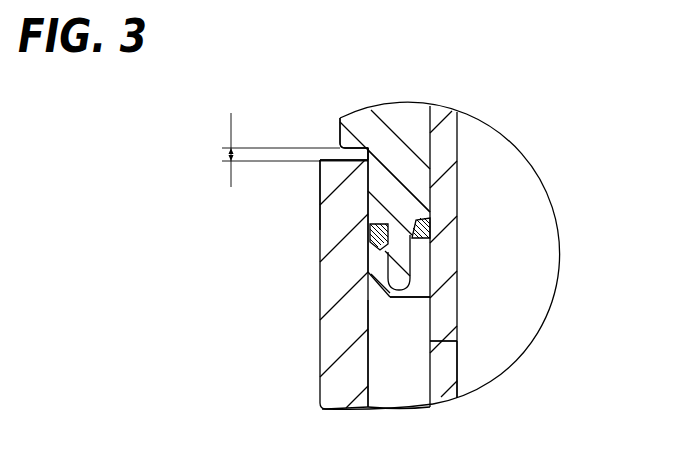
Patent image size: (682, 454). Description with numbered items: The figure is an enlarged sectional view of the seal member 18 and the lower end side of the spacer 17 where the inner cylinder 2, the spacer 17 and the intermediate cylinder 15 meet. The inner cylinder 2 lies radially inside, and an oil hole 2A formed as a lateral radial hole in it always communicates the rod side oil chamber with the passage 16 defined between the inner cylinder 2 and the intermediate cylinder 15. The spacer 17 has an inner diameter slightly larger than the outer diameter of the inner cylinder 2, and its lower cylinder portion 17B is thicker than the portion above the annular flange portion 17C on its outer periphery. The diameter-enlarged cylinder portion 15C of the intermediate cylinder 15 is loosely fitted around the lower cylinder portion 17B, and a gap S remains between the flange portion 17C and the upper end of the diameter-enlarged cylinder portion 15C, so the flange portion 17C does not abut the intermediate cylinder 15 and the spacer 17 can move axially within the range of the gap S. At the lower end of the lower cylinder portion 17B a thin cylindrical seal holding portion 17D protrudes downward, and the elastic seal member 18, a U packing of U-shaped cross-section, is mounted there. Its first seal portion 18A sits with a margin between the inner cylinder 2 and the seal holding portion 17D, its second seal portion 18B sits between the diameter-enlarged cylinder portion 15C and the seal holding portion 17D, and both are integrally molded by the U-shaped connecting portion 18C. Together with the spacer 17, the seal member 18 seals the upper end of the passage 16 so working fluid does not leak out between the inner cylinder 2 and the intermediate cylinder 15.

The inner cylinder 2 is at (447, 136).
The oil hole 2A is at (460, 388).
The intermediate cylinder 15 is at (319, 350).
The diameter-enlarged cylinder portion 15C is at (333, 210).
The passage 16 is at (387, 377).
The spacer 17 is at (402, 117).
The lower cylinder portion 17B is at (410, 197).
The flange portion 17C is at (338, 128).
The seal holding portion 17D is at (368, 278).
The seal member 18 is at (418, 282).
The first seal portion 18A is at (415, 237).
The second seal portion 18B is at (368, 254).
The U-shaped connecting portion 18C is at (450, 345).
The gap S is at (289, 150).